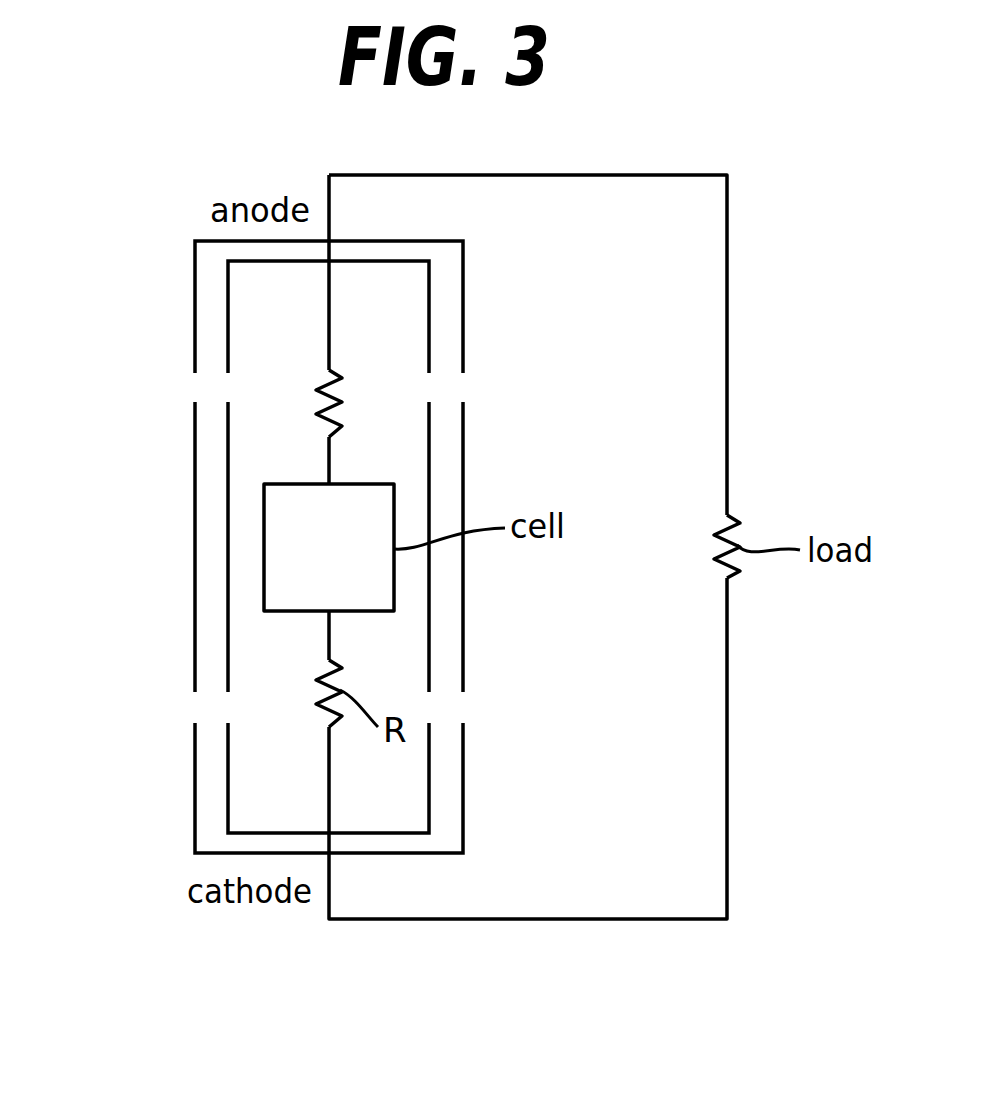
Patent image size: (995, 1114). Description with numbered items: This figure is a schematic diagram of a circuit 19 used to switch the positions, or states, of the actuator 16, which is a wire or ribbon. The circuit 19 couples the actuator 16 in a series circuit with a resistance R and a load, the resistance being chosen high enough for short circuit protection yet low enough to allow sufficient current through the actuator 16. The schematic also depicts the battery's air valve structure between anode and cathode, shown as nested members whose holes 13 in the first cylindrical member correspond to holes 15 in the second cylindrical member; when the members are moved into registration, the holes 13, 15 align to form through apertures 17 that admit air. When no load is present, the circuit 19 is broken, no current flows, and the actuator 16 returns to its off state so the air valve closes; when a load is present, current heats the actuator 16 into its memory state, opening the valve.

The circuit 19 is at (256, 475).
The through apertures 17 is at (262, 547).
The holes 15 is at (227, 388).
The holes 13 is at (195, 392).
The actuator 16 is at (342, 401).